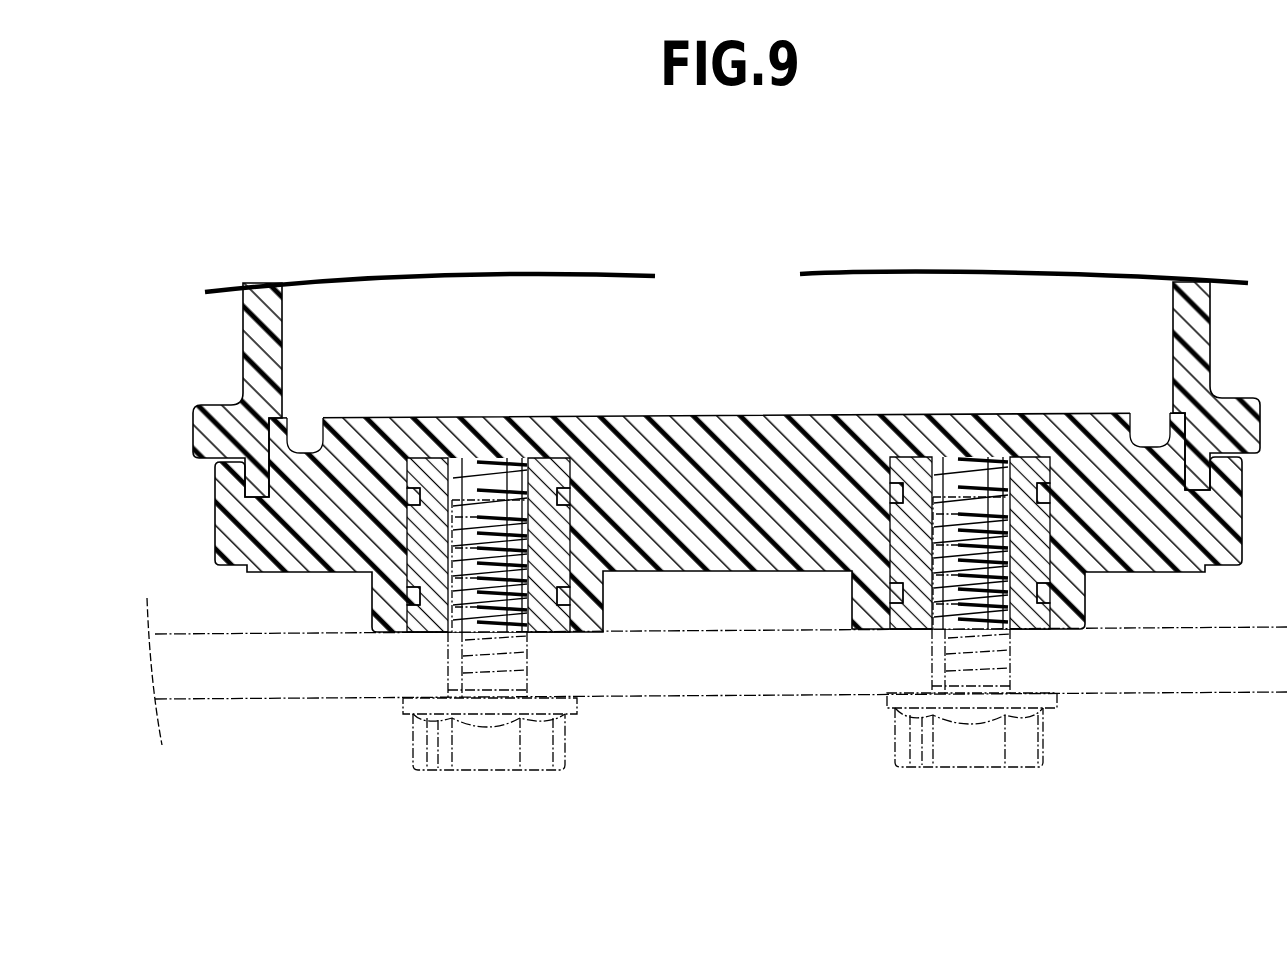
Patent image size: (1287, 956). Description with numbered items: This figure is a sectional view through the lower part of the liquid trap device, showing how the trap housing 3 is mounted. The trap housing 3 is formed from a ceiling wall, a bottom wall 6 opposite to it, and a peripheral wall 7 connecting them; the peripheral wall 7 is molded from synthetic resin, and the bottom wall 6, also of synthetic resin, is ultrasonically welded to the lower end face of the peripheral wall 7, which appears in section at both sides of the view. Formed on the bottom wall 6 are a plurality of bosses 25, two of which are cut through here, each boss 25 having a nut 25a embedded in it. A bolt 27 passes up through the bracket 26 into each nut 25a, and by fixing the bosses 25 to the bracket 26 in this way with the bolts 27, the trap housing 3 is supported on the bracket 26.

The trap housing 3 is at (1047, 256).
The bottom wall 6 is at (683, 437).
The peripheral wall 7 is at (1211, 327).
The boss 25 is at (385, 603).
The nut 25a is at (430, 613).
The bracket 26 is at (250, 680).
The bolt 27 is at (497, 744).